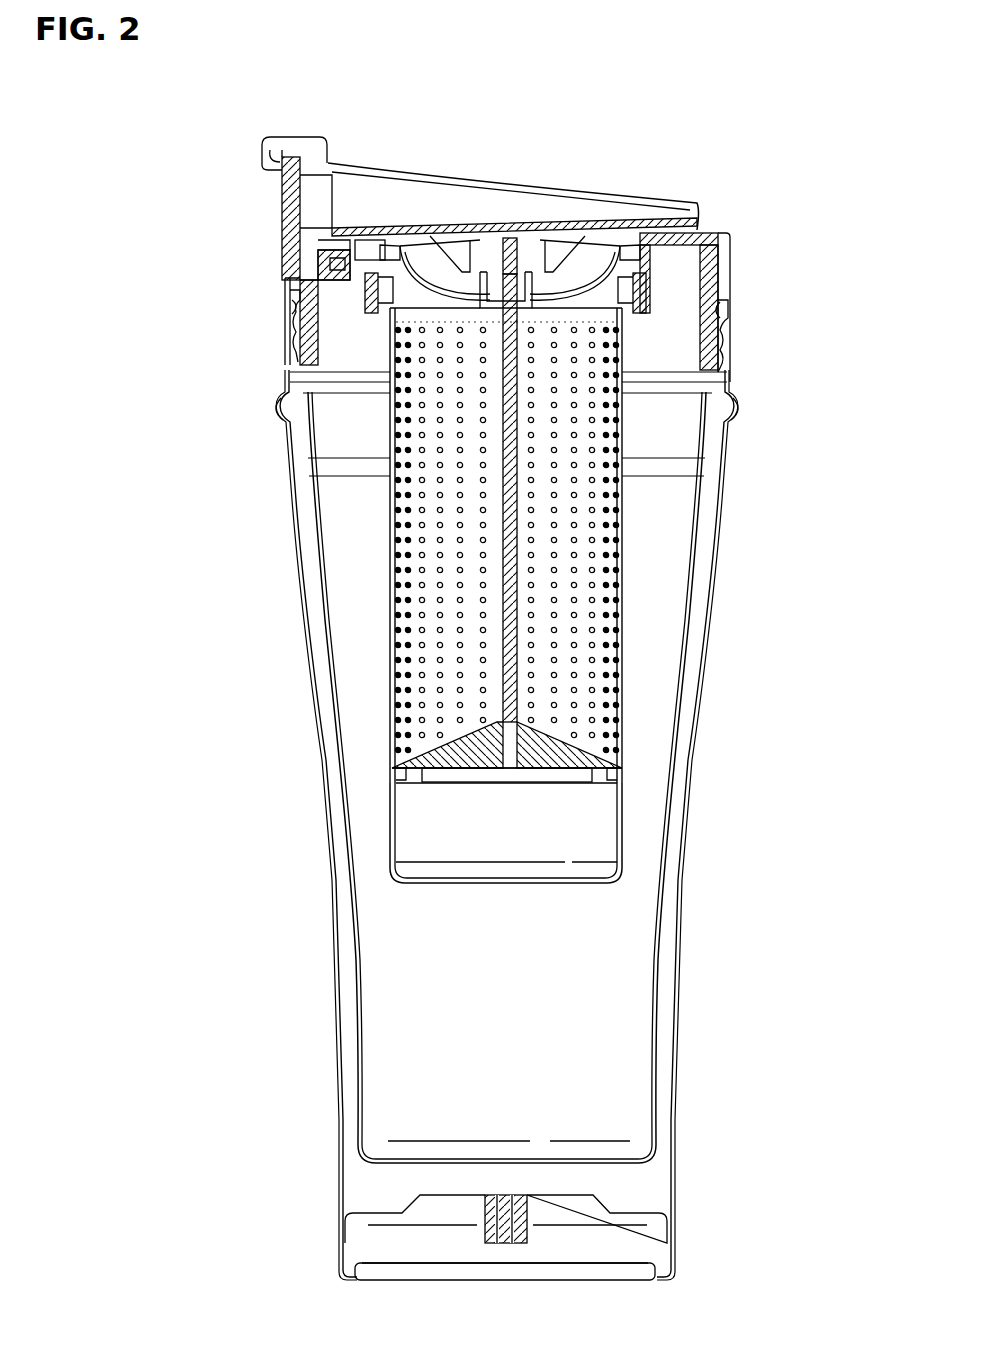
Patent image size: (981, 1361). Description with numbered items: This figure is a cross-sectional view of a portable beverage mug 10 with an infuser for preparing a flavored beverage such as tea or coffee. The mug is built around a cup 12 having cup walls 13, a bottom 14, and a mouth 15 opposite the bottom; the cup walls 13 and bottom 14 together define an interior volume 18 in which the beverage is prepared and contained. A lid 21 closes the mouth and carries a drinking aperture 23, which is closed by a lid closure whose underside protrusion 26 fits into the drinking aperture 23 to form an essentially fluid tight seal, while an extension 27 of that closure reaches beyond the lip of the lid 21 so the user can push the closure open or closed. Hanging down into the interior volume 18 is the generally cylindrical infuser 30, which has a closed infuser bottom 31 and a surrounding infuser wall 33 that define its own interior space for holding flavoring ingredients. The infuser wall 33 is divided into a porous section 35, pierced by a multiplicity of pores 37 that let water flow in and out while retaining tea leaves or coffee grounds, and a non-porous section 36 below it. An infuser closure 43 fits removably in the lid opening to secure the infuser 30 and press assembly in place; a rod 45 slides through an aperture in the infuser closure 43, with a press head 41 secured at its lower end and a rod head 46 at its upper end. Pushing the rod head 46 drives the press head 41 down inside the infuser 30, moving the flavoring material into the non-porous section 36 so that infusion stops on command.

The portable beverage mug 10 is at (733, 100).
The cup 12 is at (310, 528).
The cup walls 13 is at (302, 548).
The bottom 14 is at (345, 1228).
The mouth 15 is at (728, 333).
The interior volume 18 is at (632, 1062).
The lid 21 is at (727, 258).
The drinking aperture 23 is at (340, 295).
The protrusion 26 is at (322, 254).
The extension 27 is at (292, 138).
The infuser 30 is at (580, 606).
The closed infuser bottom 31 is at (535, 883).
The infuser wall 33 is at (623, 680).
The porous section 35 is at (600, 715).
The non-porous section 36 is at (600, 817).
The pores 37 is at (527, 525).
The press head 41 is at (450, 745).
The infuser closure 43 is at (582, 238).
The rod 45 is at (495, 600).
The rod head 46 is at (512, 236).